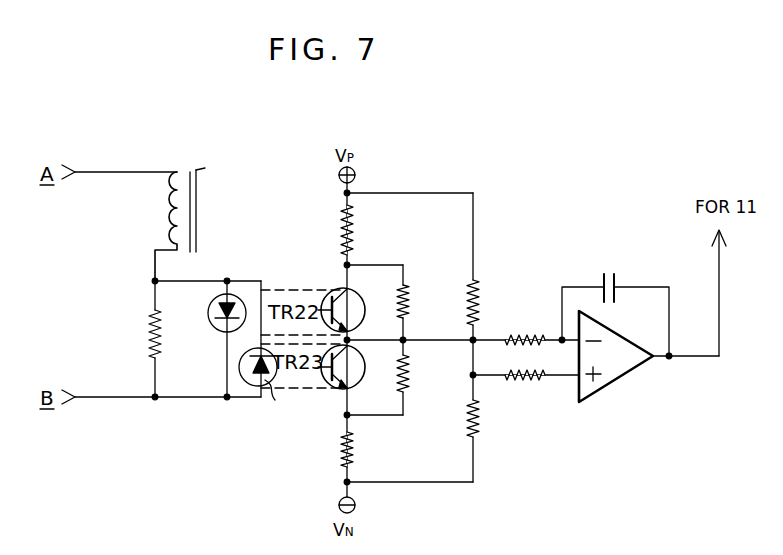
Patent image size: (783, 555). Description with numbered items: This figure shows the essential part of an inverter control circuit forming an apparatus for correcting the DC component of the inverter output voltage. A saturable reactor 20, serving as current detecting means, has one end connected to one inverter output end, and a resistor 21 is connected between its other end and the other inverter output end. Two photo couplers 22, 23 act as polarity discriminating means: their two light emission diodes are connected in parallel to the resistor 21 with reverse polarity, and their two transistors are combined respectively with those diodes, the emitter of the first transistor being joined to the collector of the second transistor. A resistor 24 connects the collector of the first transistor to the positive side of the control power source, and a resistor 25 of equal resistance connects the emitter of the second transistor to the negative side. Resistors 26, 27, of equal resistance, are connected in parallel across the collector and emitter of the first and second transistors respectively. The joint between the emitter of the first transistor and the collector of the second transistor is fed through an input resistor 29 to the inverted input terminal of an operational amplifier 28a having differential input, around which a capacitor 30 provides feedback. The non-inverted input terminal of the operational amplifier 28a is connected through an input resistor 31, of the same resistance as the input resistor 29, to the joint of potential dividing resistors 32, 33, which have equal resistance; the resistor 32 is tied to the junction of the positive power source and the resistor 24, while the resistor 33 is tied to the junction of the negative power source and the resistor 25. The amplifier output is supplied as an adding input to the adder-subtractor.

The saturable reactor 20 is at (177, 172).
The resistor 21 is at (148, 332).
The photo coupler 22 is at (250, 284).
The photo coupler 23 is at (256, 398).
The resistor 24 is at (340, 232).
The resistor 25 is at (342, 459).
The resistor 26 is at (406, 284).
The resistor 27 is at (409, 375).
The operational amplifier 28a is at (620, 378).
The input resistor 29 is at (522, 334).
The capacitor for feedback 30 is at (618, 283).
The input resistor 31 is at (528, 385).
The potential dividing resistor 32 is at (476, 293).
The potential dividing resistor 33 is at (478, 425).